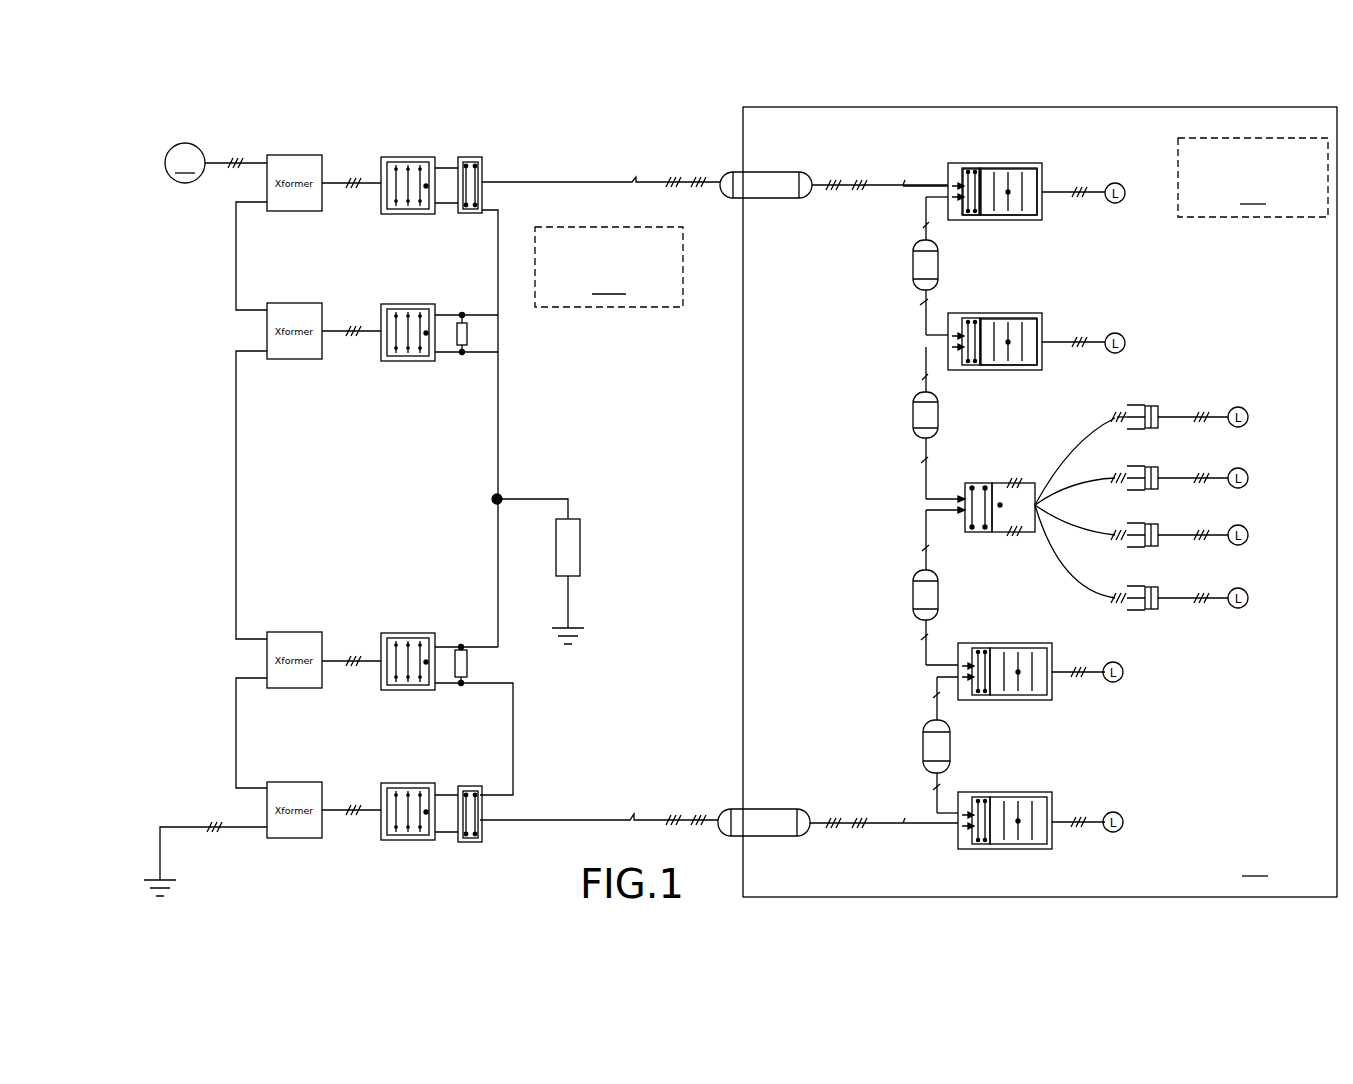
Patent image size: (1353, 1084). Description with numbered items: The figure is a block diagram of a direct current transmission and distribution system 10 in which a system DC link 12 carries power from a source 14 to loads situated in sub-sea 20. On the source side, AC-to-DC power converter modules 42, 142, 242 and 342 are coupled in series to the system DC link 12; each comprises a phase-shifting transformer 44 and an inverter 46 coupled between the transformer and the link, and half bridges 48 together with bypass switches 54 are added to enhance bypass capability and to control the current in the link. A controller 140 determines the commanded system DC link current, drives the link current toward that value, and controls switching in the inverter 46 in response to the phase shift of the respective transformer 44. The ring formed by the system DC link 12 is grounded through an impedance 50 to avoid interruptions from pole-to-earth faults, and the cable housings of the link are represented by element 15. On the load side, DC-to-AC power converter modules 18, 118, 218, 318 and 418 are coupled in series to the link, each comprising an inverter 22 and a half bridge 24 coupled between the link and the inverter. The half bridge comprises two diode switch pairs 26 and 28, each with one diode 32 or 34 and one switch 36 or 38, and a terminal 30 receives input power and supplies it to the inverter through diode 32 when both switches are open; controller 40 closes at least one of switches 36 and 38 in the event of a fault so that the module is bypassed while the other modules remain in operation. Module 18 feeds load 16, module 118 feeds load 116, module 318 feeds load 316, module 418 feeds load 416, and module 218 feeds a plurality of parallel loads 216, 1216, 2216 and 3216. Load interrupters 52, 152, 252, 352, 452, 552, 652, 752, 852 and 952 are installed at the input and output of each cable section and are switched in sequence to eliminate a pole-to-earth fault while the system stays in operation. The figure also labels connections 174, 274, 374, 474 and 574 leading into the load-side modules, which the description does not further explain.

The direct current transmission and distribution system 10 is at (102, 680).
The system DC link 12 is at (708, 190).
The source 14 is at (216, 163).
The cable housing 15 is at (770, 198).
The load 16 is at (1114, 182).
The DC-to-AC power converter module 18 is at (950, 164).
The sub-sea 20 is at (1040, 502).
The inverter 22 is at (1014, 168).
The half bridge 24 is at (975, 219).
The diode switch pair 26 is at (968, 531).
The diode switch pair 28 is at (984, 531).
The terminal 30 is at (1010, 482).
The diode 32 is at (982, 489).
The diode 34 is at (968, 528).
The switch 36 is at (986, 520).
The switch 38 is at (965, 486).
The controller 40 is at (1253, 177).
The source-side AC-to-DC power converter module 42 is at (348, 130).
The phase-shifting transformer 44 is at (290, 211).
The inverter 46 is at (395, 214).
The half bridge 48 is at (465, 214).
The impedance 50 is at (575, 540).
The load interrupter 52 is at (905, 197).
The bypass switch 54 is at (470, 333).
The load 116 is at (1115, 332).
The DC-to-AC power converter module 118 is at (950, 314).
The controller 140 is at (609, 267).
The source-side AC-to-DC power converter module 142 is at (350, 334).
The load interrupter 152 is at (922, 225).
The conductor 174 is at (915, 187).
The load 216 is at (1240, 406).
The DC-to-AC power converter module 218 is at (972, 486).
The source-side AC-to-DC power converter module 242 is at (361, 618).
The load interrupter 252 is at (927, 300).
The conductor 274 is at (945, 337).
The load 316 is at (1113, 662).
The DC-to-AC power converter module 318 is at (970, 645).
The source-side AC-to-DC power converter module 342 is at (364, 776).
The load interrupter 352 is at (920, 377).
The conductor 374 is at (946, 507).
The load 416 is at (1113, 812).
The DC-to-AC power converter module 418 is at (970, 795).
The load interrupter 452 is at (920, 460).
The conductor 474 is at (948, 668).
The load interrupter 552 is at (920, 548).
The conductor 574 is at (946, 820).
The load interrupter 652 is at (920, 634).
The load interrupter 752 is at (932, 693).
The load interrupter 852 is at (932, 787).
The load interrupter 952 is at (903, 828).
The load 1216 is at (1242, 468).
The load 2216 is at (1242, 525).
The load 3216 is at (1242, 588).